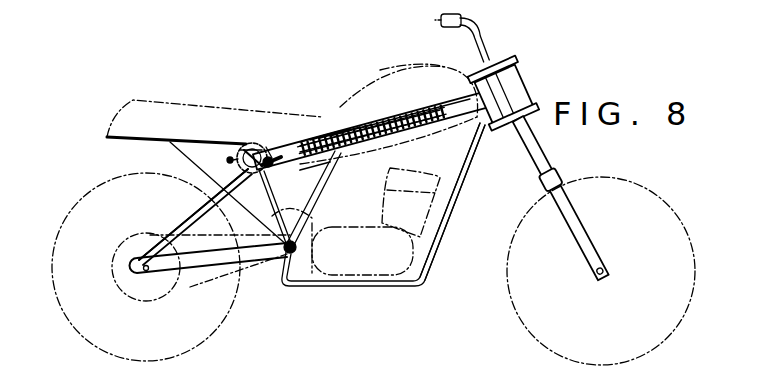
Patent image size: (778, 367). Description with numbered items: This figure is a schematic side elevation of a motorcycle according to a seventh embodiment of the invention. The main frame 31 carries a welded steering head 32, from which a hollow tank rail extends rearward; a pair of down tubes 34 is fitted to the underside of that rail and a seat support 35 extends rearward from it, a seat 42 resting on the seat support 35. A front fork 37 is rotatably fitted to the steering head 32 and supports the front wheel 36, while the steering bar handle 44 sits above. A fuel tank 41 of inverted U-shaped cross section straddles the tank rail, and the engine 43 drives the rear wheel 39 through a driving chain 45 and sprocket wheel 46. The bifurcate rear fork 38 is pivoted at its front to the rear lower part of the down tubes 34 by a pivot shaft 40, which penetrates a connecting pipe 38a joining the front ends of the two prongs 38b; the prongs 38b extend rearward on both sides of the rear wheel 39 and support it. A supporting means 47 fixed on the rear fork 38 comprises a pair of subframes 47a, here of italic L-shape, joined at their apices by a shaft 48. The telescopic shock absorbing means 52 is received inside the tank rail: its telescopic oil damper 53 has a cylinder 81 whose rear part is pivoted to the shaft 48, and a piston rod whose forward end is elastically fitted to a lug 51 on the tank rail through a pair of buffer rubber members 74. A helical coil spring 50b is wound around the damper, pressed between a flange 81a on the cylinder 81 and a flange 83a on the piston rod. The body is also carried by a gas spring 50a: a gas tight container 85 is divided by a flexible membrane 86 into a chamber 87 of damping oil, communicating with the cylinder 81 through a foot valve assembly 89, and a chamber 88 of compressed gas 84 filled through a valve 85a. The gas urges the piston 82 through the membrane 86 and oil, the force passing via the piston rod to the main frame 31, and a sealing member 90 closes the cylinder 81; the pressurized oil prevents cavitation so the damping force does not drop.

The main frame 31 is at (430, 288).
The steering head 32 is at (505, 73).
The down tubes 34 is at (443, 238).
The seat support 35 is at (132, 140).
The front wheel 36 is at (686, 314).
The front fork 37 is at (581, 219).
The rear fork 38 is at (197, 272).
The connecting pipe 38a is at (300, 245).
The prongs 38b is at (283, 276).
The rear wheel 39 is at (58, 303).
The pivot shaft 40 is at (288, 283).
The fuel tank 41 is at (337, 127).
The seat 42 is at (132, 108).
The engine 43 is at (388, 264).
The steering bar handle 44 is at (468, 25).
The driving chain 45 is at (171, 297).
The sprocket wheel 46 is at (112, 273).
The supporting means 47 is at (169, 218).
The triangular subframes 47a is at (308, 218).
The shaft 48 is at (284, 190).
The gas spring 50a is at (250, 143).
The helical coil spring 50b is at (391, 116).
The lug 51 is at (441, 105).
The telescopic shock absorbing means 52 is at (331, 133).
The telescopic oil damper 53 is at (322, 183).
The buffer rubber members 74 is at (432, 122).
The cylinder 81 is at (373, 129).
The flange 81a is at (355, 150).
The piston 82 is at (341, 130).
The flange 83a is at (426, 84).
The compressed gas 84 is at (250, 143).
The gas tight container 85 is at (246, 184).
The valve 85a is at (208, 187).
The flexible membrane 86 is at (227, 160).
The chamber 87 is at (270, 143).
The chamber 88 is at (246, 145).
The foot valve assembly 89 is at (277, 165).
The sealing member 90 is at (350, 126).